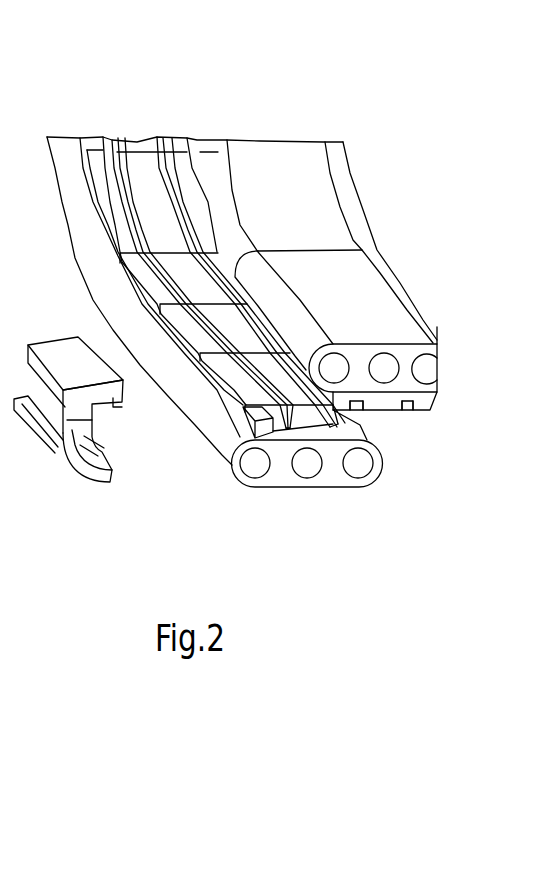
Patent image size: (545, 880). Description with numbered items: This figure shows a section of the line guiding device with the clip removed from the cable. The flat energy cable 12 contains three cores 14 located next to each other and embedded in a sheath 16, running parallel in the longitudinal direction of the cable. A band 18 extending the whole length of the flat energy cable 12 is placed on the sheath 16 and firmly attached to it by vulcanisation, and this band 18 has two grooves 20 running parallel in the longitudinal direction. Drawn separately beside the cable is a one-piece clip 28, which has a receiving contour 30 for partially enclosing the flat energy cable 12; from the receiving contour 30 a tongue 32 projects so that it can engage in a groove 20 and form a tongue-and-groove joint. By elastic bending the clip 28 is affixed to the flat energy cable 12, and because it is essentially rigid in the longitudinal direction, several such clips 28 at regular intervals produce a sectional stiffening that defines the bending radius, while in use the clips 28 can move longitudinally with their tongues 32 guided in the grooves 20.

The flat energy cable 12 is at (282, 167).
The cores 14 is at (358, 465).
The sheath 16 is at (337, 472).
The band 18 is at (387, 403).
The grooves 20 is at (357, 410).
The clip 28 is at (40, 425).
The receiving contour 30 is at (95, 412).
The tongue 32 is at (120, 407).